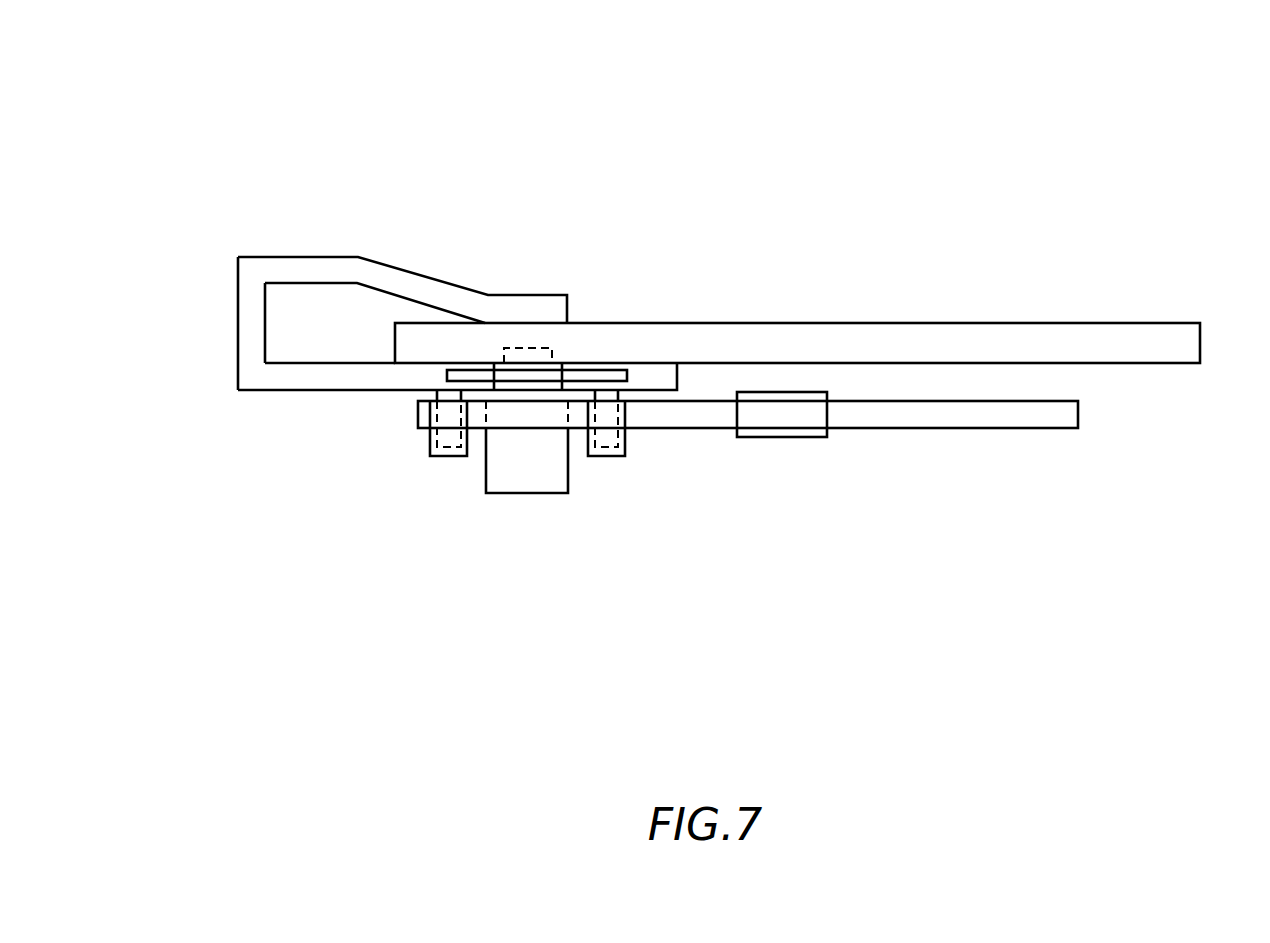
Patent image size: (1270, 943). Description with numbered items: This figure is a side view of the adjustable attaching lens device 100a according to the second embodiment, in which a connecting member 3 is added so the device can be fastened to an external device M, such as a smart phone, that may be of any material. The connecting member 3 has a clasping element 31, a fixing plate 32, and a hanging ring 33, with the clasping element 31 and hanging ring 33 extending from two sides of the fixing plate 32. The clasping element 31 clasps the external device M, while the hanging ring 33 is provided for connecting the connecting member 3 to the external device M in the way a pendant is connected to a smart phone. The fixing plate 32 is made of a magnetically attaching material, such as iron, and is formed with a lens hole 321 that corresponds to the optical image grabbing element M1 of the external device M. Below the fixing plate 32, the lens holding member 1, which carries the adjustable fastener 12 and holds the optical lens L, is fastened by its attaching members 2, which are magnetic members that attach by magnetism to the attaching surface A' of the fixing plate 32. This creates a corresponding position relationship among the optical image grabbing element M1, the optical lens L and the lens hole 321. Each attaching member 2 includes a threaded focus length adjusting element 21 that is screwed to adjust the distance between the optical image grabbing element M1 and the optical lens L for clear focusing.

The adjustable attaching lens device 100a is at (1176, 140).
The lens holding member 1 is at (993, 420).
The adjustable fastener 12 is at (780, 422).
The attaching member 2 is at (606, 450).
The focus length adjusting element 21 is at (612, 437).
The connecting member 3 is at (248, 303).
The clasping element 31 is at (317, 267).
The fixing plate 32 is at (317, 377).
The lens hole 321 is at (527, 384).
The hanging ring 33 is at (598, 377).
The external device M is at (702, 330).
The optical image grabbing element M1 is at (530, 348).
The optical lens L is at (528, 455).
The attaching surface A' is at (381, 434).